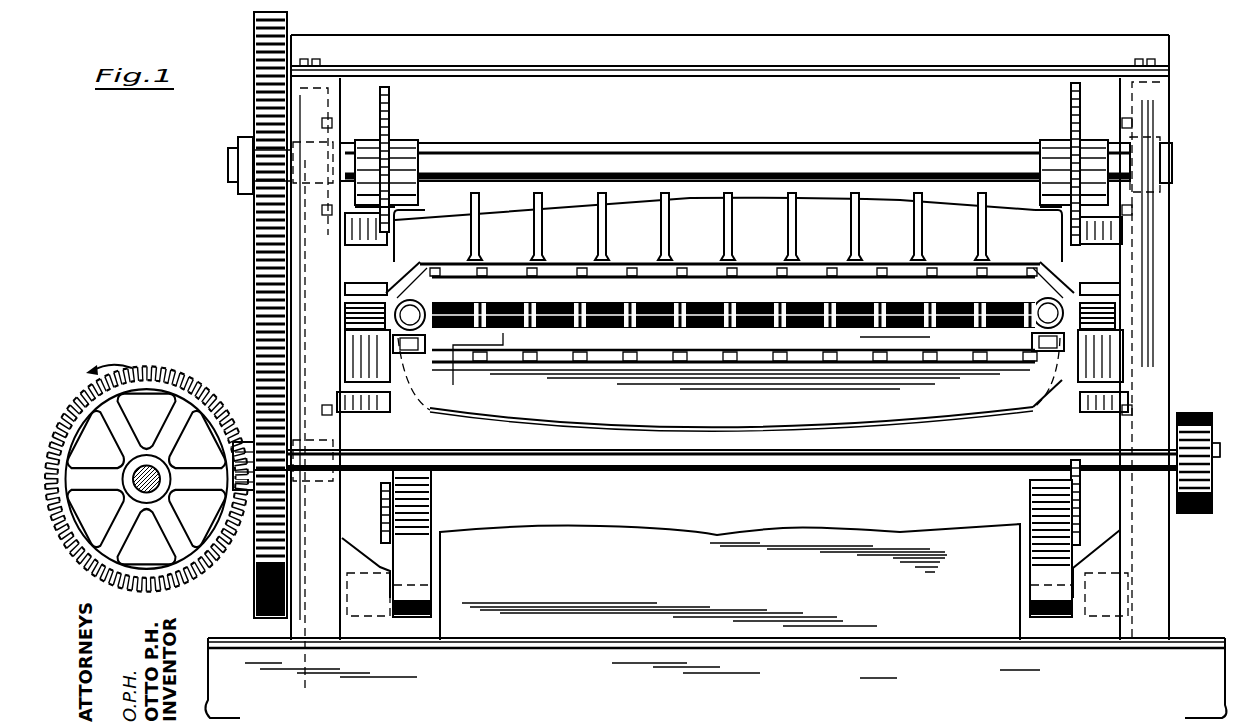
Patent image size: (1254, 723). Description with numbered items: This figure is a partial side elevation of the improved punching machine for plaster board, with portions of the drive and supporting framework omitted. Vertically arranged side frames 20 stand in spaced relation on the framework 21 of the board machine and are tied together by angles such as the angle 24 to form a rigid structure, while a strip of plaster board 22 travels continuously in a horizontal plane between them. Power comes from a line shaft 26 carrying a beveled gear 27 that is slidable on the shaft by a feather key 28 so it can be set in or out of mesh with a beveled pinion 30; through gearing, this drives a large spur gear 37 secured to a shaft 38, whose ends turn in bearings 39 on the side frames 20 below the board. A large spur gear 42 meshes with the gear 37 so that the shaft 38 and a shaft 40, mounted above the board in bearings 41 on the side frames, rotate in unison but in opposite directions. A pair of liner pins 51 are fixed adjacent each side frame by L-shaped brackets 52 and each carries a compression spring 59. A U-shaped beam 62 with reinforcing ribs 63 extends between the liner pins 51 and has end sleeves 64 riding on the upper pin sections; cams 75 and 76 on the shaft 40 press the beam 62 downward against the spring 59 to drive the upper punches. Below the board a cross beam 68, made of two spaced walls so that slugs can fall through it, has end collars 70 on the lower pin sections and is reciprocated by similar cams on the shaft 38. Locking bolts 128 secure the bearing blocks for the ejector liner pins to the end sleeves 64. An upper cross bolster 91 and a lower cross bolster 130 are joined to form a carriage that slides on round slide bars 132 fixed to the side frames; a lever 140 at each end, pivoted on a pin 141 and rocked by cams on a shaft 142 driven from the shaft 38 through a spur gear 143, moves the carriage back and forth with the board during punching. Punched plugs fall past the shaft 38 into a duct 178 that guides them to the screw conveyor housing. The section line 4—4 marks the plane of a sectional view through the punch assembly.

The side frames 20 is at (292, 634).
The framework 21 is at (580, 642).
The plaster board 22 is at (500, 470).
The angle 24 is at (822, 45).
The line shaft 26 is at (147, 468).
The beveled gear 27 is at (132, 368).
The feather key 28 is at (148, 470).
The beveled pinion 30 is at (238, 506).
The large spur gear 37 is at (257, 570).
The shaft 38 is at (1213, 466).
The bearings 39 is at (1183, 550).
The shaft 40 is at (905, 153).
The bearings 41 is at (320, 197).
The large spur gear 42 is at (252, 95).
The section line 4— 4 is at (502, 145).
The liner pins 51 is at (360, 225).
The L-shaped brackets 52 is at (372, 230).
The compression spring 59 is at (343, 318).
The U-shaped beam 62 is at (497, 217).
The reinforcing ribs 63 is at (542, 210).
The end sleeves 64 is at (360, 268).
The cross beam 68 is at (545, 410).
The end collars 70 is at (362, 357).
The cam 75 is at (1079, 126).
The cam 76 is at (386, 131).
The upper cross bolster 91 is at (857, 282).
The locking bolts 128 is at (345, 289).
The lower cross bolster 130 is at (893, 338).
The round slide bar 132 is at (412, 322).
The lever 140 is at (425, 558).
The pin 141 is at (440, 597).
The shaft 142 is at (893, 470).
The spur gear 143 is at (1190, 512).
The duct 178 is at (640, 530).